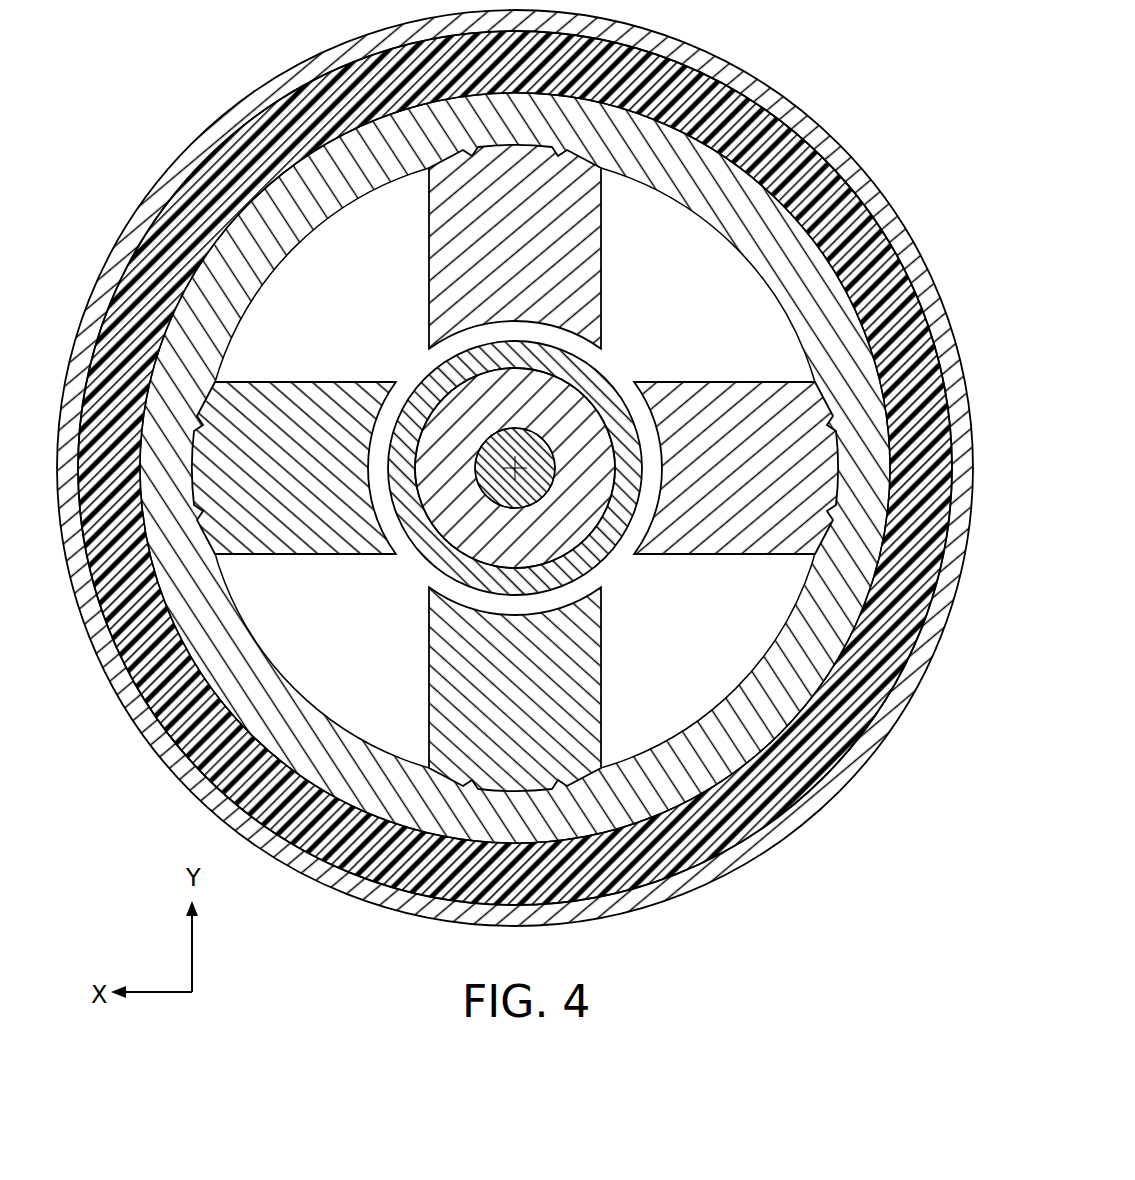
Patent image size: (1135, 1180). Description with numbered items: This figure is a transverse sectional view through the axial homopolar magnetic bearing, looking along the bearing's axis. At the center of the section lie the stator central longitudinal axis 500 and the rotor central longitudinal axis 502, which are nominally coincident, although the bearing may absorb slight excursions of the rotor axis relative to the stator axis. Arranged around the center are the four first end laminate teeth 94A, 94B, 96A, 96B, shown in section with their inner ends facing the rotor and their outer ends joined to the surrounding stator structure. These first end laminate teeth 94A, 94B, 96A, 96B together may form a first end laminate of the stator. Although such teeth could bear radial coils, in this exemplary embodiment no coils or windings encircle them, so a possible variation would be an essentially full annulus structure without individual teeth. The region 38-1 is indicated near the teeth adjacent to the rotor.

The rotor shaft section 38-1 is at (647, 444).
The first end laminate tooth 94A is at (288, 512).
The first end laminate tooth 94B is at (740, 510).
The first end laminate tooth 96A is at (580, 708).
The first end laminate tooth 96B is at (539, 212).
The central longitudinal axis of the stator 500 is at (517, 473).
The central longitudinal axis of the rotor 502 is at (584, 523).